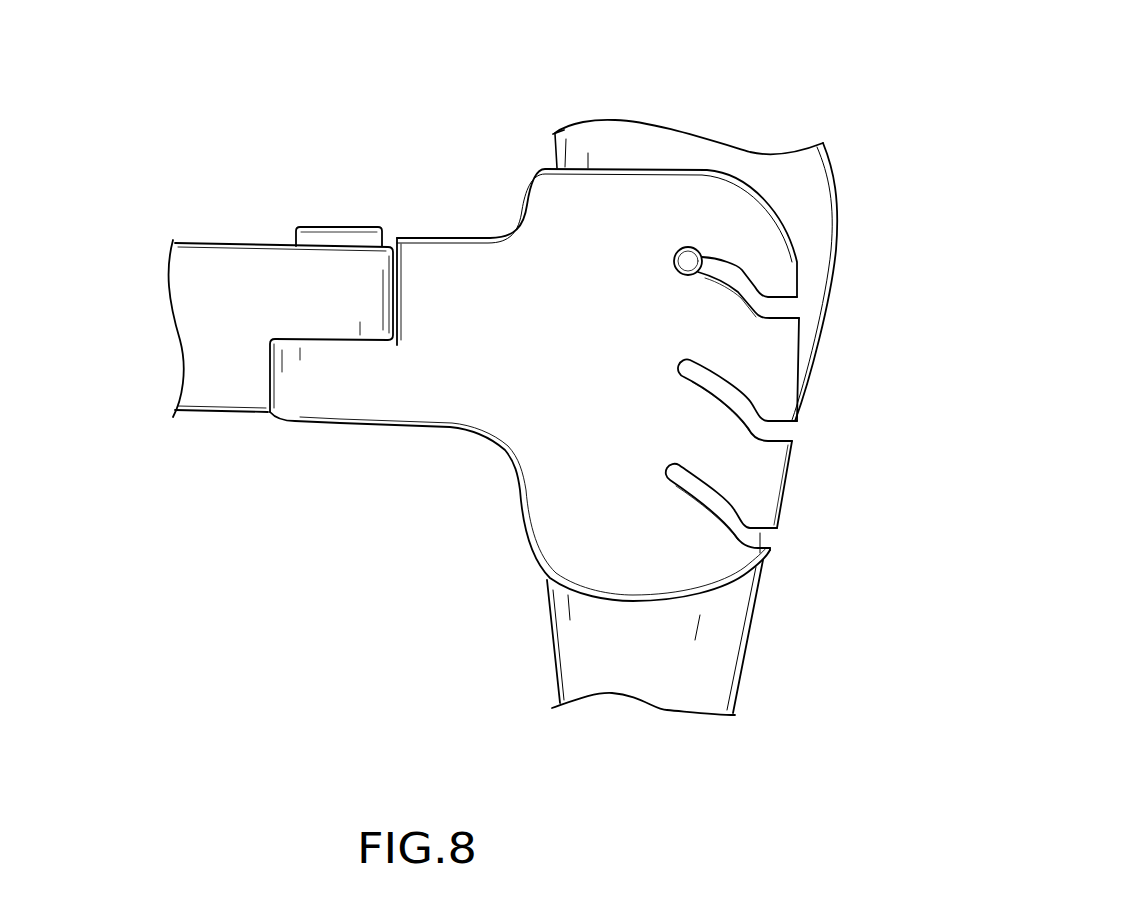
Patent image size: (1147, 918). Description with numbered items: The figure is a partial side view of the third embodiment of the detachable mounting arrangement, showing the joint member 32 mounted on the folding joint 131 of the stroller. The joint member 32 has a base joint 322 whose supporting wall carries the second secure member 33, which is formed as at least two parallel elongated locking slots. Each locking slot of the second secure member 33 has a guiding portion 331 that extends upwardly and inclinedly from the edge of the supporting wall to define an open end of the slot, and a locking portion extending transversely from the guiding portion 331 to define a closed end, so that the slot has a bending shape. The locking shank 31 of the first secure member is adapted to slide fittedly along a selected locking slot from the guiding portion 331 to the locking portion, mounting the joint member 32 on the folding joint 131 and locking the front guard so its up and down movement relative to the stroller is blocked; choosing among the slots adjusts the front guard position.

The second secure member 33 is at (695, 397).
The locking shank 31 is at (687, 247).
The base joint 322 is at (708, 171).
The guiding portion 331 is at (778, 293).
The joint member 32 is at (473, 407).
The foldable joint 131 is at (723, 653).